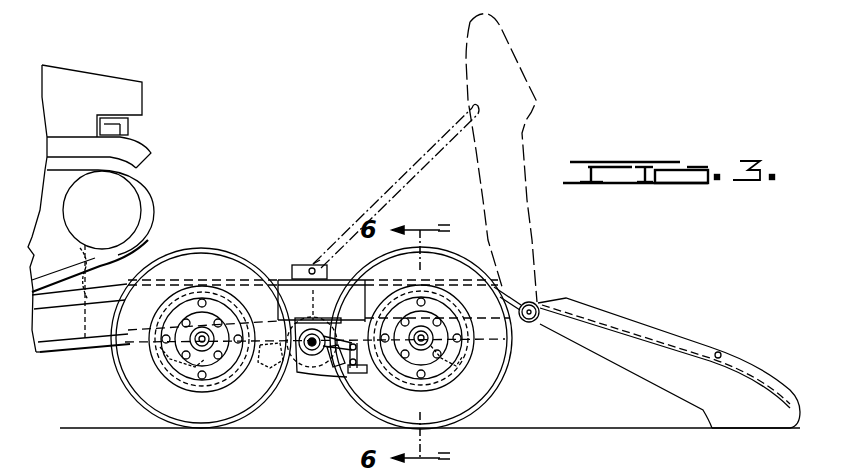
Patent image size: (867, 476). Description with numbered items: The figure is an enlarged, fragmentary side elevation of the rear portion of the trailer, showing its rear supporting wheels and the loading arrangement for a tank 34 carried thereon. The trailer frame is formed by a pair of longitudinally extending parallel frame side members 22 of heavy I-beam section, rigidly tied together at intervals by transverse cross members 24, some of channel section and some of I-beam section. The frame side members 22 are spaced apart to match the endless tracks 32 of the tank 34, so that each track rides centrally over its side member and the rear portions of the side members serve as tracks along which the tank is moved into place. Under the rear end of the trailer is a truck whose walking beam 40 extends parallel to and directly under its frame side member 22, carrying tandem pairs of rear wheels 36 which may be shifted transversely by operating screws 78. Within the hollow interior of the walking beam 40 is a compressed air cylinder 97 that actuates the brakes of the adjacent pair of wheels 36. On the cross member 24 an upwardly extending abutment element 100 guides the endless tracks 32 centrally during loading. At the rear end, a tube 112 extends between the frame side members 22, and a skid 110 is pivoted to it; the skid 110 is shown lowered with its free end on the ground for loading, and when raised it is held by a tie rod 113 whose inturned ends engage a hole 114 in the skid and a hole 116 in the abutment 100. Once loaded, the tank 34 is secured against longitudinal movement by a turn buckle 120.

The frame side member 22 is at (50, 356).
The cross member 24 is at (82, 327).
The endless track 32 is at (140, 186).
The tank 34 is at (133, 94).
The rear wheel 36 is at (135, 395).
The walking beam 40 is at (290, 375).
The screw 78 is at (290, 316).
The compressed air cylinder 97 is at (337, 373).
The abutment element 100 is at (292, 264).
The skid 110 is at (522, 135).
The tube 112 is at (535, 325).
The tie rod 113 is at (418, 164).
The hole 114 is at (718, 352).
The hole 116 is at (310, 264).
The turn buckle 120 is at (140, 257).